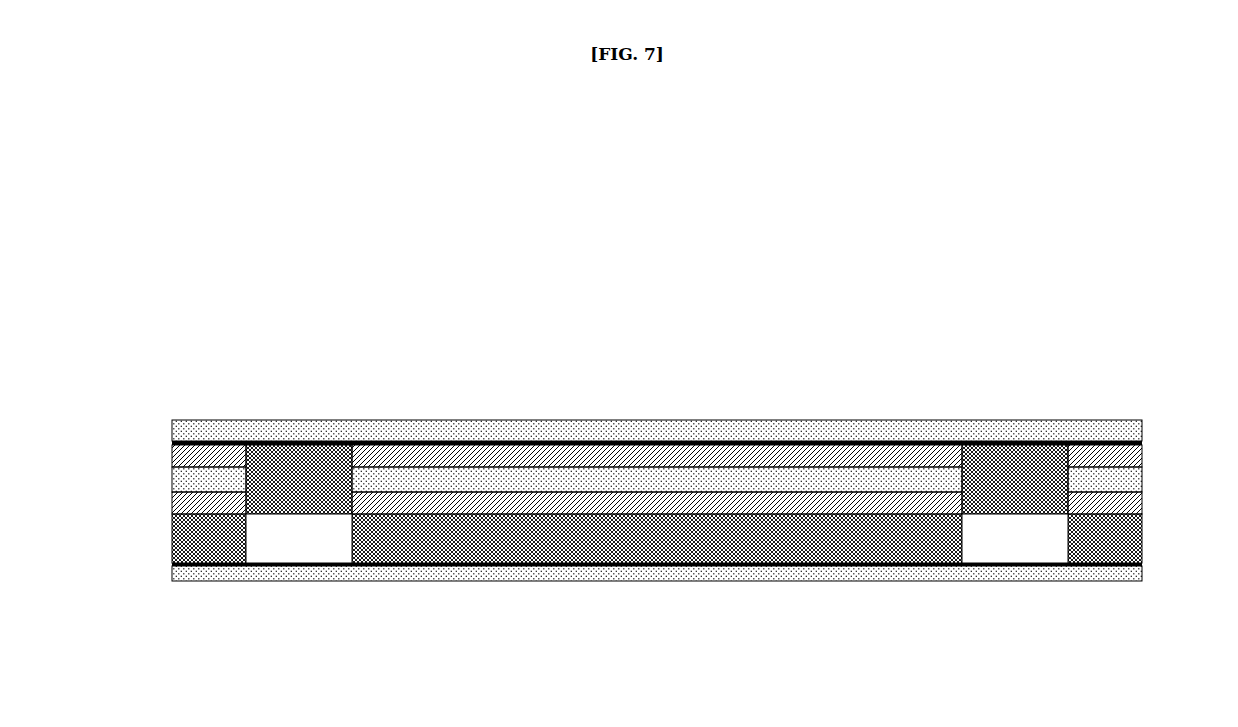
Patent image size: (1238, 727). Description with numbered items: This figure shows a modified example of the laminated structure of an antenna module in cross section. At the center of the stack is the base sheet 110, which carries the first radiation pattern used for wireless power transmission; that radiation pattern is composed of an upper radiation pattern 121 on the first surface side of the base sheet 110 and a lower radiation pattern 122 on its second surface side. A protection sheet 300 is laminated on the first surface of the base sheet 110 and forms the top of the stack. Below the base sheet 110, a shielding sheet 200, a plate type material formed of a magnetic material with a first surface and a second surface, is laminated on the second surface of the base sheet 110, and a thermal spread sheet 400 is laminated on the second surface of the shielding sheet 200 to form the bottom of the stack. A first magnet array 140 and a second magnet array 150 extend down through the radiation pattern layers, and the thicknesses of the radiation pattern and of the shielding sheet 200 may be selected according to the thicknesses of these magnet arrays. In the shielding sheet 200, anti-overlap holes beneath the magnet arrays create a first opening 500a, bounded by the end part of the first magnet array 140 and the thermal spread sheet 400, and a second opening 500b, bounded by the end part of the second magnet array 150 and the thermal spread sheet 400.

The base sheet 110 is at (172, 473).
The upper radiation pattern 121 is at (1142, 458).
The lower radiation pattern 122 is at (1142, 505).
The first magnet array 140 is at (305, 441).
The second magnet array 150 is at (1013, 442).
The shielding sheet 200 is at (172, 540).
The protection sheet 300 is at (602, 420).
The thermal spread sheet 400 is at (612, 583).
The first opening 500a is at (310, 547).
The second opening 500b is at (1020, 548).